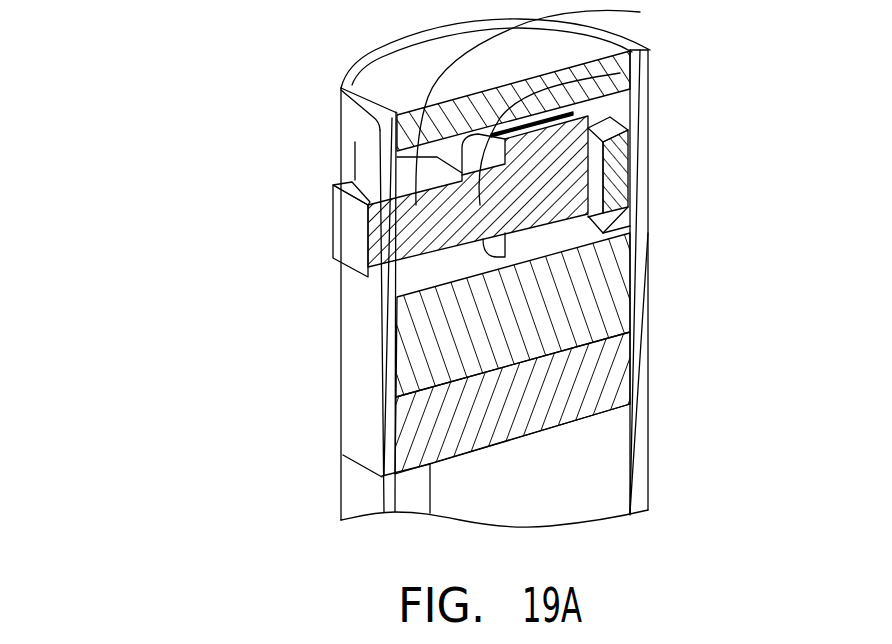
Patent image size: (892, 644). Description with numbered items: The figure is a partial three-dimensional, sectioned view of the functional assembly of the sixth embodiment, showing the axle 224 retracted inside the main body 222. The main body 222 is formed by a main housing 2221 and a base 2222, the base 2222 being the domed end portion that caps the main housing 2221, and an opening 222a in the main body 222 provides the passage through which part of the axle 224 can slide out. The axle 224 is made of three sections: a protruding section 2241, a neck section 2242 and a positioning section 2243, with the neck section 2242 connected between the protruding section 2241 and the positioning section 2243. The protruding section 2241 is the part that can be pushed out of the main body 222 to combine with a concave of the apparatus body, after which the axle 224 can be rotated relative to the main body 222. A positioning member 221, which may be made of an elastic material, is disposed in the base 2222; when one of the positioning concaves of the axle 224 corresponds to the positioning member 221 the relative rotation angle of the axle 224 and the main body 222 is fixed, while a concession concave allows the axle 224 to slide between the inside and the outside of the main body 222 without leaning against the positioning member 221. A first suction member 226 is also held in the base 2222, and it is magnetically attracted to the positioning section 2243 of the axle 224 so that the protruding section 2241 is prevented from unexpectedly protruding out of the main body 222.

The positioning member 221 is at (588, 287).
The main body 222 is at (395, 273).
The main housing 2221 is at (355, 142).
The base 2222 is at (392, 75).
The opening 222a is at (367, 188).
The axle 224 is at (622, 104).
The protruding section 2241 is at (640, 12).
The neck section 2242 is at (620, 73).
The positioning section 2243 is at (575, 113).
The first suction member 226 is at (597, 185).